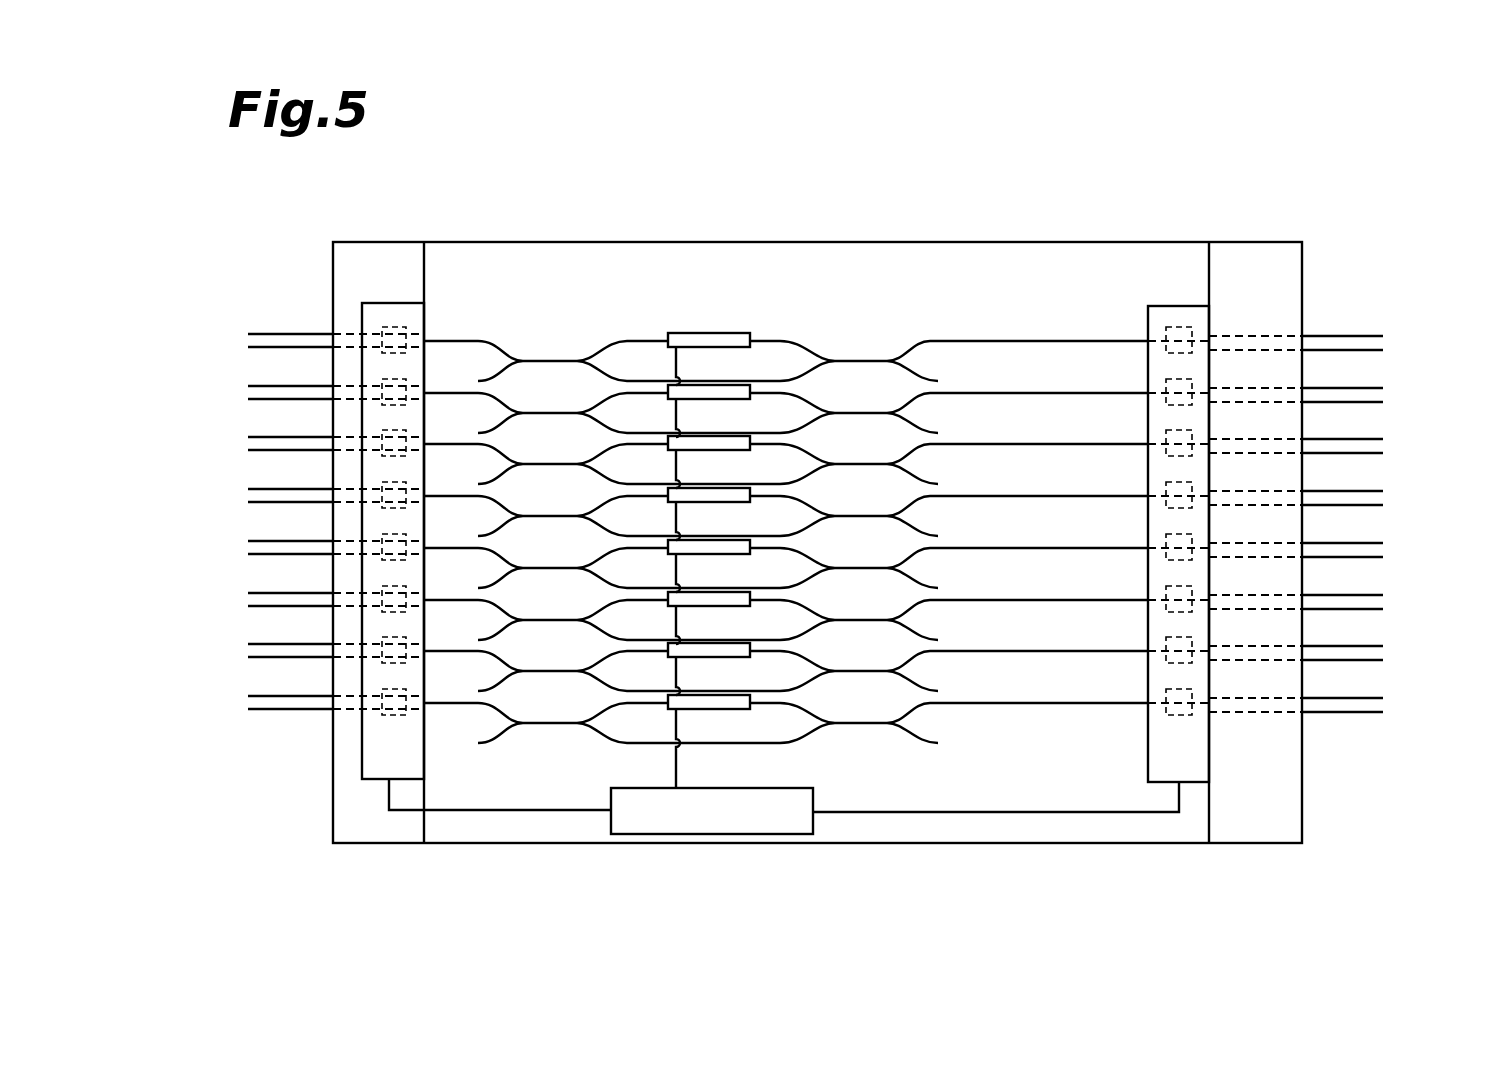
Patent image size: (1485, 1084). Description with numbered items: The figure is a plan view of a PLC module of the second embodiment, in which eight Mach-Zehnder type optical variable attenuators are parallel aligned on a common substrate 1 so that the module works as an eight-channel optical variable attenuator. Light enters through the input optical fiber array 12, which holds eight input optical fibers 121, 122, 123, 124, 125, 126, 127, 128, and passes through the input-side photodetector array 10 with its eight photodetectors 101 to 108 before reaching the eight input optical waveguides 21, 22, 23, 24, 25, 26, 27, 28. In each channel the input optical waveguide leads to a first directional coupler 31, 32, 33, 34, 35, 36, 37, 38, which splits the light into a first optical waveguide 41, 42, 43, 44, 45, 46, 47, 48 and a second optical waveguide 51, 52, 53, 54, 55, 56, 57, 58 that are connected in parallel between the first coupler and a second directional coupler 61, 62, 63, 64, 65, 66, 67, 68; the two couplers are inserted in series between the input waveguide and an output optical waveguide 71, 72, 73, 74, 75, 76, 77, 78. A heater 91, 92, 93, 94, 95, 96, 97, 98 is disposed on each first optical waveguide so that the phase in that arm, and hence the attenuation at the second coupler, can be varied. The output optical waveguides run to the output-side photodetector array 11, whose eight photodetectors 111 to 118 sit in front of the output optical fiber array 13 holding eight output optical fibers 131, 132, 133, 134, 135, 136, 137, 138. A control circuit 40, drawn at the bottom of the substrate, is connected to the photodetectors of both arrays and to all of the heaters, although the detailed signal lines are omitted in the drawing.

The common substrate 1 is at (957, 242).
The photodetector array 10 is at (396, 303).
The photodetector array 11 is at (1180, 306).
The input optical fiber array 12 is at (352, 242).
The output optical fiber array 13 is at (1260, 242).
The control circuit 40 is at (705, 834).
The photodetector 101 is at (347, 299).
The photodetector 108 is at (344, 741).
The photodetector 111 is at (1159, 301).
The photodetector 118 is at (1141, 742).
The input optical fiber 121 is at (313, 322).
The input optical fiber 122 is at (313, 374).
The input optical fiber 123 is at (313, 425).
The input optical fiber 124 is at (313, 477).
The input optical fiber 125 is at (313, 529).
The input optical fiber 126 is at (313, 581).
The input optical fiber 127 is at (313, 632).
The input optical fiber 128 is at (313, 684).
The output optical fiber 131 is at (1321, 326).
The output optical fiber 132 is at (1321, 378).
The output optical fiber 133 is at (1321, 429).
The output optical fiber 134 is at (1321, 481).
The output optical fiber 135 is at (1321, 533).
The output optical fiber 136 is at (1321, 585).
The output optical fiber 137 is at (1321, 636).
The output optical fiber 138 is at (1321, 688).
The input optical waveguide 21 is at (473, 361).
The input optical waveguide 22 is at (473, 413).
The input optical waveguide 23 is at (473, 464).
The input optical waveguide 24 is at (473, 516).
The input optical waveguide 25 is at (473, 568).
The input optical waveguide 26 is at (473, 620).
The input optical waveguide 27 is at (473, 671).
The input optical waveguide 28 is at (473, 723).
The first directional coupler 31 is at (550, 340).
The first directional coupler 32 is at (550, 392).
The first directional coupler 33 is at (550, 443).
The first directional coupler 34 is at (550, 495).
The first directional coupler 35 is at (550, 547).
The first directional coupler 36 is at (550, 599).
The first directional coupler 37 is at (550, 650).
The first directional coupler 38 is at (550, 702).
The first optical waveguide 41 is at (627, 361).
The first optical waveguide 42 is at (627, 413).
The first optical waveguide 43 is at (627, 464).
The first optical waveguide 44 is at (627, 516).
The first optical waveguide 45 is at (627, 568).
The first optical waveguide 46 is at (627, 620).
The first optical waveguide 47 is at (627, 671).
The first optical waveguide 48 is at (627, 723).
The second optical waveguide 51 is at (756, 361).
The second optical waveguide 52 is at (756, 413).
The second optical waveguide 53 is at (756, 464).
The second optical waveguide 54 is at (756, 516).
The second optical waveguide 55 is at (756, 568).
The second optical waveguide 56 is at (756, 620).
The second optical waveguide 57 is at (756, 671).
The second optical waveguide 58 is at (756, 723).
The second directional coupler 61 is at (861, 340).
The second directional coupler 62 is at (861, 392).
The second directional coupler 63 is at (861, 443).
The second directional coupler 64 is at (861, 495).
The second directional coupler 65 is at (861, 547).
The second directional coupler 66 is at (861, 599).
The second directional coupler 67 is at (861, 650).
The second directional coupler 68 is at (861, 702).
The output optical waveguide 71 is at (1048, 361).
The output optical waveguide 72 is at (1048, 413).
The output optical waveguide 73 is at (1048, 464).
The output optical waveguide 74 is at (1048, 516).
The output optical waveguide 75 is at (1048, 568).
The output optical waveguide 76 is at (1048, 620).
The output optical waveguide 77 is at (1048, 671).
The output optical waveguide 78 is at (1048, 723).
The heater 91 is at (709, 359).
The heater 92 is at (709, 411).
The heater 93 is at (709, 462).
The heater 94 is at (709, 514).
The heater 95 is at (709, 566).
The heater 96 is at (709, 618).
The heater 97 is at (709, 669).
The heater 98 is at (709, 741).